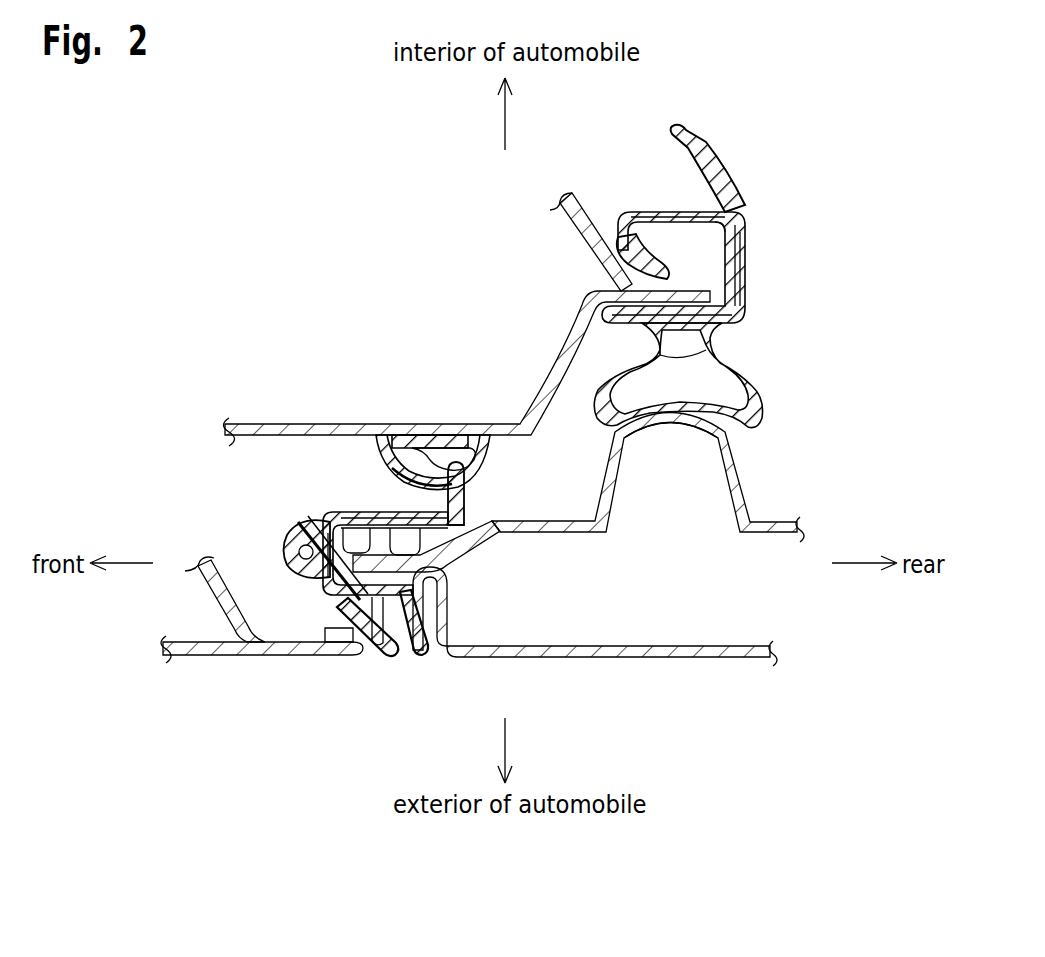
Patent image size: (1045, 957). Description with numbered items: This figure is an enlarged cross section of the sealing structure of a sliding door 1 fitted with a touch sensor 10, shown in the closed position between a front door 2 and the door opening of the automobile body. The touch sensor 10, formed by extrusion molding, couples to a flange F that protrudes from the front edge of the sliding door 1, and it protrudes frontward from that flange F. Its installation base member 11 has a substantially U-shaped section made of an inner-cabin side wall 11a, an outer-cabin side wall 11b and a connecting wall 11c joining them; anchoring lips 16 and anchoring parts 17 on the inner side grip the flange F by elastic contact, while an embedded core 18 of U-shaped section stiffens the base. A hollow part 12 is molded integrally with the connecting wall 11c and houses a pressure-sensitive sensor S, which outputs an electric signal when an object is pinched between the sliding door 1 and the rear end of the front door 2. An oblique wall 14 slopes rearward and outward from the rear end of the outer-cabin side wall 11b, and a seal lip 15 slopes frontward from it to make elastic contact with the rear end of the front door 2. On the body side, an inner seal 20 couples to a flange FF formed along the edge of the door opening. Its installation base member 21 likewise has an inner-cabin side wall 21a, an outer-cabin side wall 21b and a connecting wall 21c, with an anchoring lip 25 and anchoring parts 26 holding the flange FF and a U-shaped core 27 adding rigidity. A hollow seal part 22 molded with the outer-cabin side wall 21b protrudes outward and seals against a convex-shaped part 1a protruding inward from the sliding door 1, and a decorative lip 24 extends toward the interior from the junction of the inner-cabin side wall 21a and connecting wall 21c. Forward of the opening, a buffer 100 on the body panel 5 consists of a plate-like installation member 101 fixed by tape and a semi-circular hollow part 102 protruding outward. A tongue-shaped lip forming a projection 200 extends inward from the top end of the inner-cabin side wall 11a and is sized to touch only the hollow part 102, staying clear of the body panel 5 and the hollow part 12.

The sliding door 1 is at (608, 591).
The convex-shaped part 1a is at (673, 422).
The front door 2 is at (284, 687).
The body panel 5 is at (360, 424).
The touch sensor 10 is at (357, 604).
The installation base member 11 is at (330, 573).
The inner-cabin side wall 11a is at (405, 513).
The outer-cabin side wall 11b is at (360, 643).
The connecting wall 11c is at (323, 527).
The hollow part 12 is at (303, 567).
The oblique wall 14 is at (447, 607).
The seal lip 15 is at (383, 643).
The anchoring lips 16 is at (352, 540).
The anchoring parts 17 is at (385, 650).
The core 18 is at (475, 555).
The inner seal 20 is at (731, 265).
The installation base member 21 is at (660, 212).
The inner-cabin side wall 21a is at (673, 212).
The outer-cabin side wall 21b is at (673, 328).
The connecting wall 21c is at (747, 288).
The hollow seal part 22 is at (763, 410).
The decorative lip 24 is at (703, 140).
The anchoring lip 25 is at (630, 252).
The anchoring parts 26 is at (745, 222).
The core 27 is at (747, 320).
The buffer 100 is at (367, 445).
The plate-like installation member 101 is at (433, 435).
The hollow part 102 is at (393, 490).
The projection 200 is at (464, 500).
The flange F is at (290, 575).
The sensor S is at (298, 550).
The flange FF is at (730, 243).